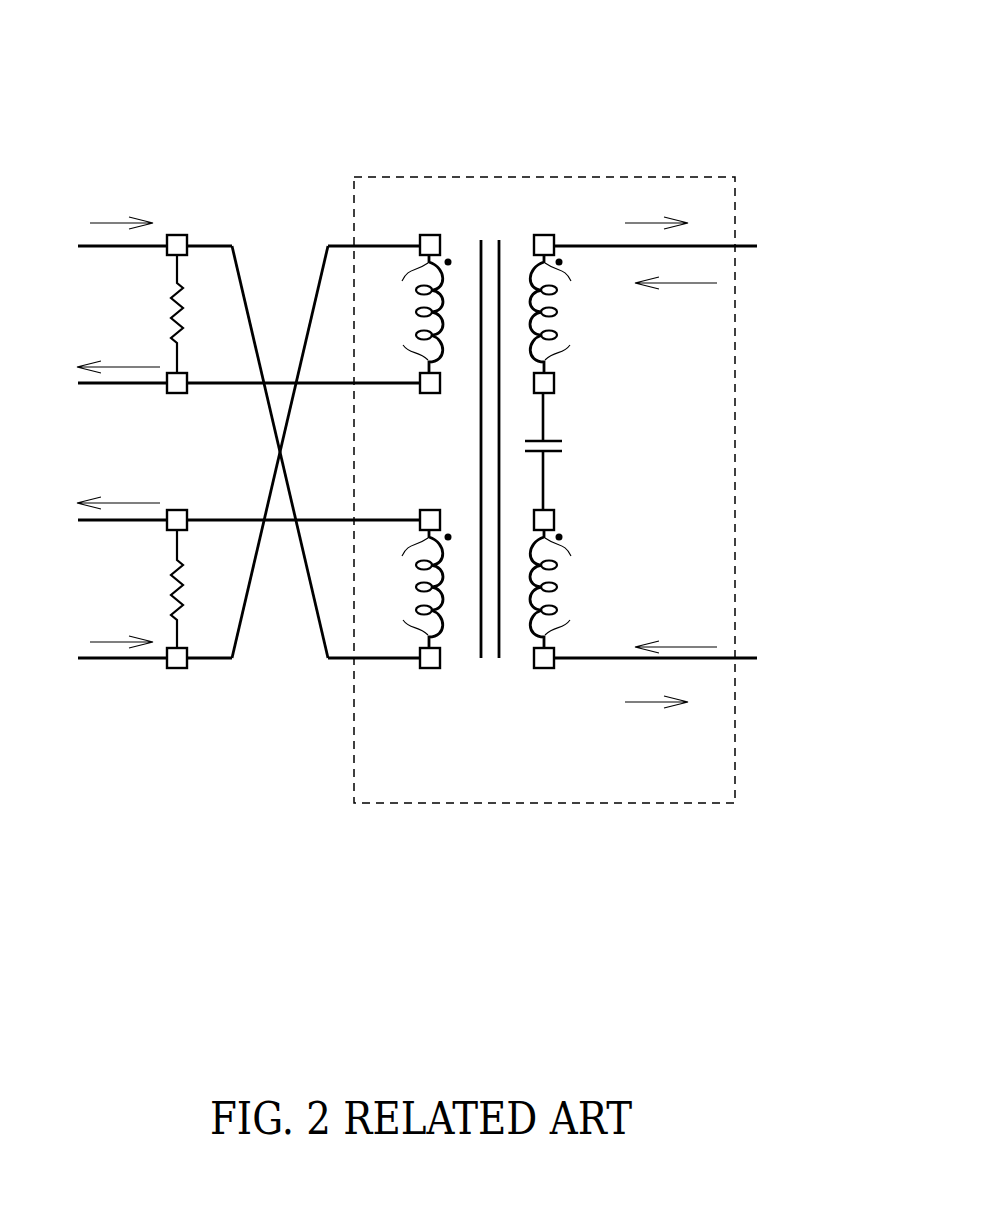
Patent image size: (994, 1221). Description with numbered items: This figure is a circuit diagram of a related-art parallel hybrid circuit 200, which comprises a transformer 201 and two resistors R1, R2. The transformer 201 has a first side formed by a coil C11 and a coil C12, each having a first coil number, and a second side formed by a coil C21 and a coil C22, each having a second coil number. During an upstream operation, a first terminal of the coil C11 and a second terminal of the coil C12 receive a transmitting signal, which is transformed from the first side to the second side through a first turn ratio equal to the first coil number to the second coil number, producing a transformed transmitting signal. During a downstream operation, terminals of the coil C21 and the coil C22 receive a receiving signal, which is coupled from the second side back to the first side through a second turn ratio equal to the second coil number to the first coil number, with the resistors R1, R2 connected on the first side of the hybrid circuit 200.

The hybrid circuit 200 is at (678, 68).
The transformer 201 is at (541, 177).
The resistor R1 is at (197, 314).
The resistor R2 is at (197, 589).
The coil C11 is at (443, 345).
The coil C12 is at (443, 620).
The coil C21 is at (530, 345).
The coil C22 is at (530, 620).